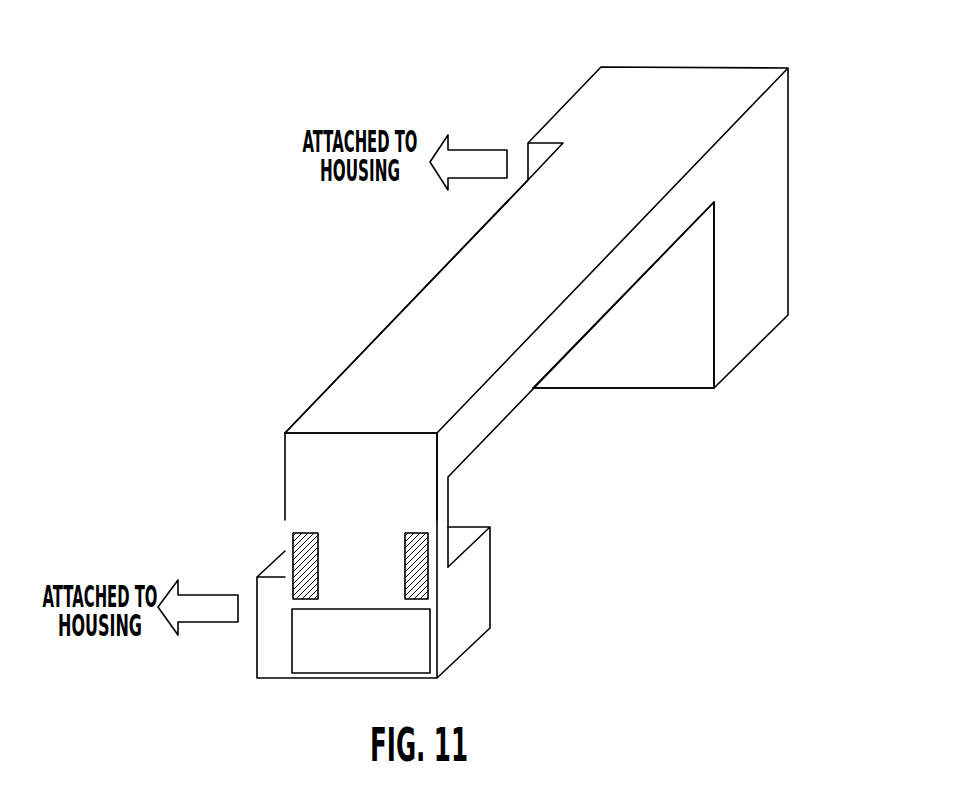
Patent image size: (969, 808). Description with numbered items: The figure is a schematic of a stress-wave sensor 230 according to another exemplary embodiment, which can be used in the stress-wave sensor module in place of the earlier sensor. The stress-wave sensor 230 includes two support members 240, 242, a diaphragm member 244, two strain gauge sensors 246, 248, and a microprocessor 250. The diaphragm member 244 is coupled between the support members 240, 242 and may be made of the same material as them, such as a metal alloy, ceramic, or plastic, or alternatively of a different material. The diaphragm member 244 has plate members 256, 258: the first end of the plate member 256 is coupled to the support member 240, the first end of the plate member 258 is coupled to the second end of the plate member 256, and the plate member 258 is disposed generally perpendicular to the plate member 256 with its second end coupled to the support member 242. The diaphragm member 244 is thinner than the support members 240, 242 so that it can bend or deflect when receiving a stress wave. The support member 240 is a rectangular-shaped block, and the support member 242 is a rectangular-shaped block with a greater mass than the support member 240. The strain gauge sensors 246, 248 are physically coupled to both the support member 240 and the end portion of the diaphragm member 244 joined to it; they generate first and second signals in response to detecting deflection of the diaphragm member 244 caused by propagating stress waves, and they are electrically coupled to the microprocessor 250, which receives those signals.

The stress-wave sensor 230 is at (837, 112).
The support member 240 is at (478, 583).
The support member 242 is at (747, 233).
The diaphragm member 244 is at (364, 326).
The strain gauge sensor 246 is at (302, 578).
The strain gauge sensor 248 is at (413, 573).
The microprocessor 250 is at (407, 630).
The plate member 256 is at (343, 523).
The plate member 258 is at (338, 375).